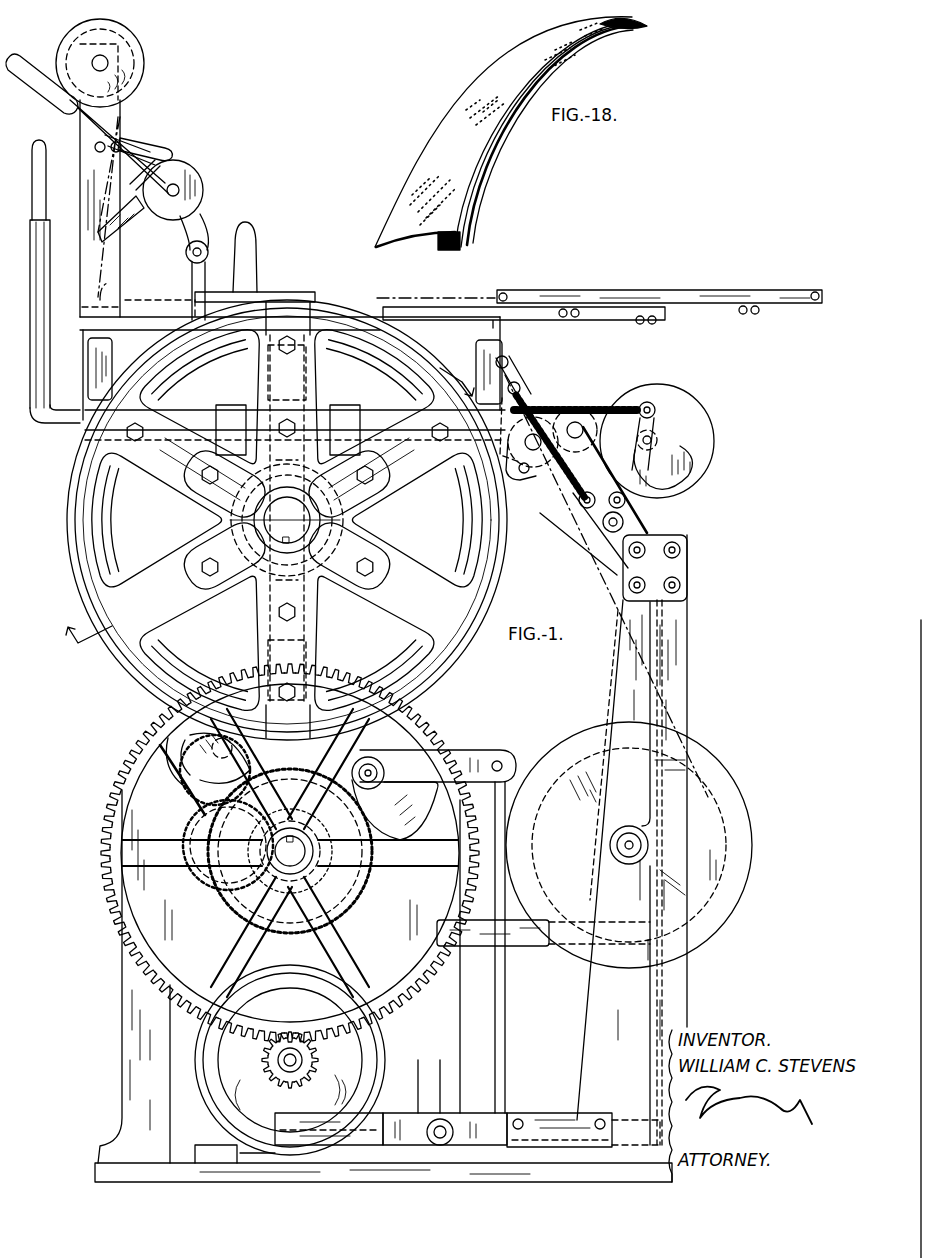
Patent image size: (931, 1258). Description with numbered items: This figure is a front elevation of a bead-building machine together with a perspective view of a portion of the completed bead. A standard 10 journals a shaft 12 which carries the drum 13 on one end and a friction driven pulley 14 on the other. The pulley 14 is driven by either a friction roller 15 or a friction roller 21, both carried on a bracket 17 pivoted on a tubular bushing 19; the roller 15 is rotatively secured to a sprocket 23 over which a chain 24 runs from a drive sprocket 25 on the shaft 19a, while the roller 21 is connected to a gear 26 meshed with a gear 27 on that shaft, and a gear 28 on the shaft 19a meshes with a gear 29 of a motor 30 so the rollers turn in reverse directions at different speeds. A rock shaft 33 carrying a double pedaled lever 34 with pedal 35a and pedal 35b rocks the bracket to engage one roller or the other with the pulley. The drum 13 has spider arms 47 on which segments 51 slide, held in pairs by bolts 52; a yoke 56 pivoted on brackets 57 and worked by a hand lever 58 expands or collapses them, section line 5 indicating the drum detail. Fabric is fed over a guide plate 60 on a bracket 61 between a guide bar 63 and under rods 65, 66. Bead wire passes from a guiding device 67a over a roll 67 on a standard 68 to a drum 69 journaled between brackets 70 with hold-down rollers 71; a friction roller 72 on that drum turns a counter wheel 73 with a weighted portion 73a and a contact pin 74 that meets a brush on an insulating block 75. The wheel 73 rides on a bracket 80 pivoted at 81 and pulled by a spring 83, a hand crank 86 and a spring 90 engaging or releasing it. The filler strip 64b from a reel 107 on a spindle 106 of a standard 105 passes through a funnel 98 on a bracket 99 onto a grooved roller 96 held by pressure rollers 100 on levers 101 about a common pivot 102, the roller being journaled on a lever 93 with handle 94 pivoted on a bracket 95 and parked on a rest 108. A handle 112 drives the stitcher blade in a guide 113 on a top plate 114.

The section line 5 is at (266, 503).
The standard 10 is at (140, 1008).
The shaft 12 is at (315, 519).
The drum 13 is at (118, 663).
The friction driven pulley 14 is at (405, 655).
The friction roller 15 is at (202, 774).
The bracket 17 is at (468, 750).
The tubular bushing 19 is at (316, 850).
The shaft 19a is at (314, 868).
The friction roller 21 is at (408, 810).
The sprocket 23 is at (184, 768).
The chain 24 is at (205, 822).
The drive sprocket 25 is at (216, 870).
The gear 26 is at (404, 733).
The gear 27 is at (300, 934).
The gear 28 is at (102, 851).
The gear 29 is at (274, 1072).
The motor 30 is at (228, 1052).
The rock shaft 33 is at (441, 1120).
The double pedaled lever 34 is at (414, 1148).
The pedal 35a is at (322, 1148).
The pedal 35b is at (583, 1148).
The spider arms 47 is at (225, 520).
The segments 51 is at (86, 458).
The bolts 52 is at (206, 479).
The yoke 56 is at (228, 408).
The brackets 57 is at (104, 357).
The hand lever 58 is at (36, 312).
The guide plate 60 is at (718, 308).
The bracket 61 is at (604, 312).
The guide bar 63 is at (684, 300).
The filler strip 64b is at (106, 172).
The rod 65 is at (813, 292).
The rod 66 is at (504, 293).
The roll 67 is at (726, 769).
The guiding device 67a is at (528, 948).
The standard 68 is at (678, 670).
The drum 69 is at (578, 406).
The brackets 70 is at (640, 532).
The rollers 71 is at (541, 475).
The friction roller 72 is at (568, 407).
The counter wheel 73 is at (708, 428).
The weighted portion 73a is at (683, 478).
The contact pin 74 is at (624, 454).
The insulating block 75 is at (536, 455).
The bracket 80 is at (632, 482).
The pivot 81 is at (623, 522).
The spring 83 is at (640, 404).
The hand crank 86 is at (516, 388).
The spring 90 is at (577, 488).
The lever 93 is at (200, 222).
The handle 94 is at (36, 75).
The bracket 95 is at (190, 250).
The roller 96 is at (213, 198).
The funnel 98 is at (130, 228).
The bracket 99 is at (143, 203).
The pressure rollers 100 is at (168, 155).
The lever 101 is at (140, 150).
The common pivot 102 is at (118, 143).
The standard 105 is at (90, 256).
The spindle 106 is at (108, 64).
The reel 107 is at (133, 62).
The rest 108 is at (96, 148).
The handle 112 is at (257, 262).
The guide 113 is at (220, 296).
The top plate 114 is at (140, 316).